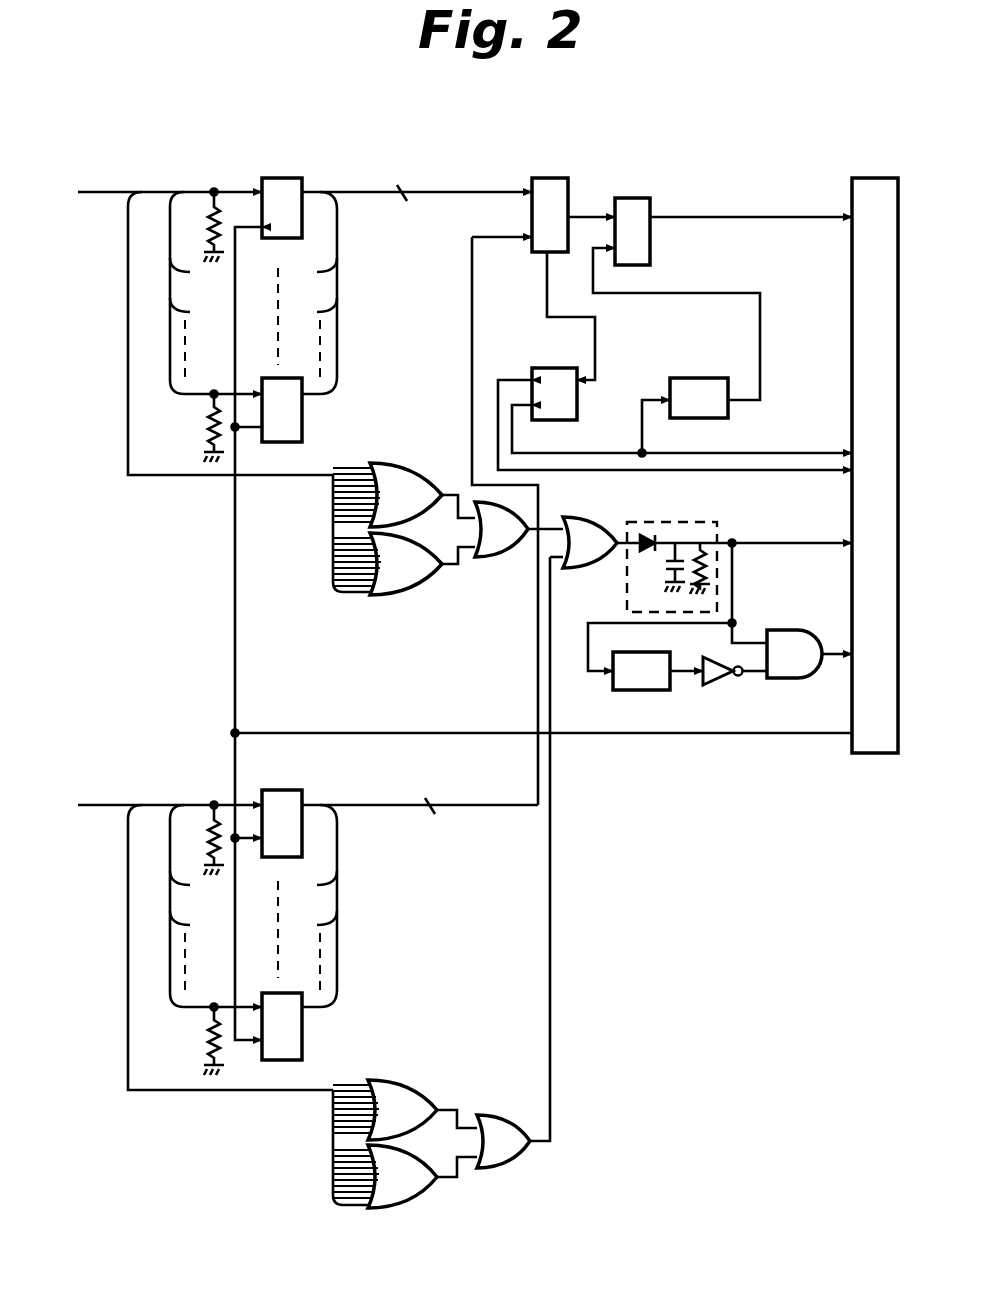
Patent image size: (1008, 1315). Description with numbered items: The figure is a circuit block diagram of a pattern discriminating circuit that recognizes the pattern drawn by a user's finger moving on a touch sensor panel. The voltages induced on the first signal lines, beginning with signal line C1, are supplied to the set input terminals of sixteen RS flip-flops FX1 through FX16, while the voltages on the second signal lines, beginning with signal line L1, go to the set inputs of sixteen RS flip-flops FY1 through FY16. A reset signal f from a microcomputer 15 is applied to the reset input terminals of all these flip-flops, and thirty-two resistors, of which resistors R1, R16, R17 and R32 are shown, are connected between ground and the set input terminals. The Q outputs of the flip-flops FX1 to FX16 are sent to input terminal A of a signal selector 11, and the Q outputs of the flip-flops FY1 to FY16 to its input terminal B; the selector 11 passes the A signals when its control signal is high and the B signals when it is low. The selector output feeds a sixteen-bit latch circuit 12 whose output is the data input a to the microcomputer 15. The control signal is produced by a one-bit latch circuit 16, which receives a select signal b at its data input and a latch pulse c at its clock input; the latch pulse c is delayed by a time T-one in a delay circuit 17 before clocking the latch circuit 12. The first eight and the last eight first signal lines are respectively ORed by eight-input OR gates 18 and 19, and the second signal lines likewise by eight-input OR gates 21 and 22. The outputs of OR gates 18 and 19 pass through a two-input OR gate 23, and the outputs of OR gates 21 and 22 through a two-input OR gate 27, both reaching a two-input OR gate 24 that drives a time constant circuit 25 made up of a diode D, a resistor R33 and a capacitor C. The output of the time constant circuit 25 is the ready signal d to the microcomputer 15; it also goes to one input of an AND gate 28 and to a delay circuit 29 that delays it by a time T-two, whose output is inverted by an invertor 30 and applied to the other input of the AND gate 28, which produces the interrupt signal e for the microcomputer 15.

The signal selector 11 is at (553, 178).
The 16-bit latch circuit 12 is at (642, 198).
The microcomputer 15 is at (872, 178).
The 1-bit latch circuit 16 is at (544, 368).
The delay circuit 17 is at (700, 378).
The 8-input OR gate 18 is at (418, 468).
The 8-input OR gate 19 is at (408, 596).
The 8-input OR gate 21 is at (425, 1086).
The 8-input OR gate 22 is at (428, 1194).
The 2-input OR gate 23 is at (500, 558).
The 2-input OR gate 24 is at (597, 519).
The time constant circuit 25 is at (627, 595).
The 2-input OR gate 27 is at (518, 1160).
The AND gate 28 is at (782, 630).
The delay circuit 29 is at (651, 690).
The invertor 30 is at (728, 682).
The RS flip-flop FX1 is at (288, 178).
The RS flip-flop FX16 is at (302, 418).
The RS flip-flop FY1 is at (286, 790).
The RS flip-flop FY16 is at (302, 1033).
The resistor R1 is at (209, 218).
The resistor R16 is at (206, 424).
The resistor R17 is at (204, 828).
The resistor R32 is at (206, 1043).
The resistor R33 is at (708, 544).
The diode D is at (652, 538).
The capacitor C is at (663, 563).
The first signal line C1 is at (96, 200).
The second signal line L1 is at (96, 812).
The data input a is at (778, 217).
The select signal b is at (797, 470).
The latch pulse c is at (805, 453).
The ready signal d is at (805, 544).
The interrupt signal e is at (827, 654).
The reset signal f is at (808, 733).